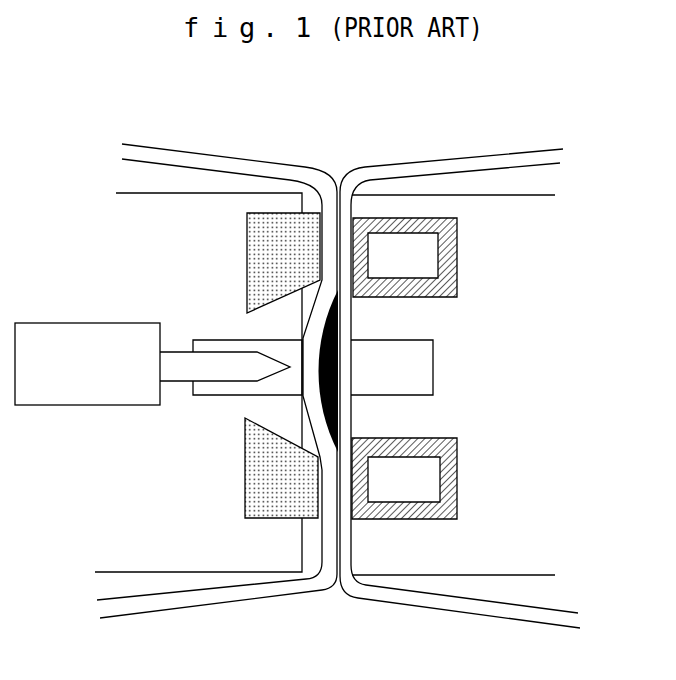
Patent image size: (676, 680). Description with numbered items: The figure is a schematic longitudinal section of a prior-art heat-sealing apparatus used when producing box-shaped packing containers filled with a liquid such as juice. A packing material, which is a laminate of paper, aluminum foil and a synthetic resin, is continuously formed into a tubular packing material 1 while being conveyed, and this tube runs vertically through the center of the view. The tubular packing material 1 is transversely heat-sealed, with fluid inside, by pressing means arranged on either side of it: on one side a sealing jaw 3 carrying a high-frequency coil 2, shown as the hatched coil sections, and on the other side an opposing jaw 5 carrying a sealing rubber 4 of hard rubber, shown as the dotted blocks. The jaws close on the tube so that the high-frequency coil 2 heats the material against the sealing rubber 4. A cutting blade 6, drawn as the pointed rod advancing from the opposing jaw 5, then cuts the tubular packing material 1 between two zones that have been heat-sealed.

The tubular packing material 1 is at (458, 158).
The high-frequency coil 2 is at (457, 462).
The sealing jaw 3 is at (522, 292).
The sealing rubber 4 is at (245, 502).
The opposing jaw 5 is at (172, 261).
The cutting blade 6 is at (227, 382).